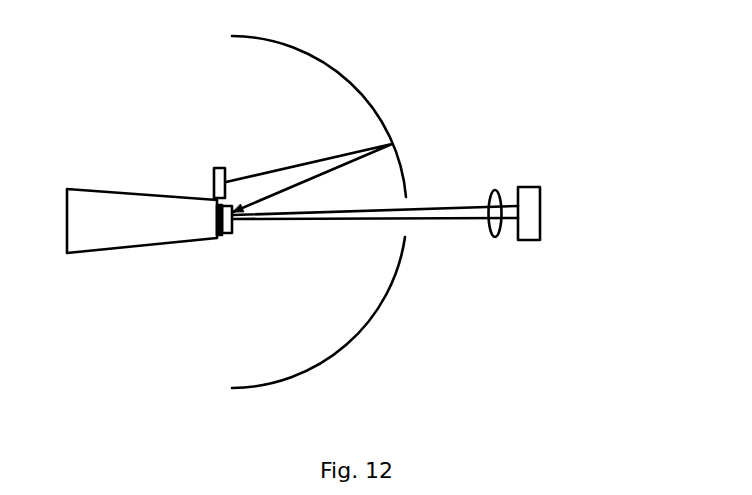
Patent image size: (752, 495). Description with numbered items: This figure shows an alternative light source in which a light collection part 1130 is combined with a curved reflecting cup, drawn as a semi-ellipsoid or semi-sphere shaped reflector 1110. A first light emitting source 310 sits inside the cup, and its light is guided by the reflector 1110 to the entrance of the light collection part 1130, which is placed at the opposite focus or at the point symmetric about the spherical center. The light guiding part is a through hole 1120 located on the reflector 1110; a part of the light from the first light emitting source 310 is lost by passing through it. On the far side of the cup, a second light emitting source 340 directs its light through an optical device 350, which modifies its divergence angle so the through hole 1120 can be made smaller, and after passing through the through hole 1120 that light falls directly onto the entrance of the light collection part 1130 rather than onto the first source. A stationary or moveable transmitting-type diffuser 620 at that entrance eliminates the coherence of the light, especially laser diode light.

The first light emitting source 310 is at (213, 175).
The second light emitting source 340 is at (528, 240).
The optical device 350 is at (495, 189).
The transmitting-type diffuser 620 is at (230, 233).
The reflector 1110 is at (375, 315).
The through hole 1120 is at (415, 238).
The light collection part 1130 is at (153, 245).